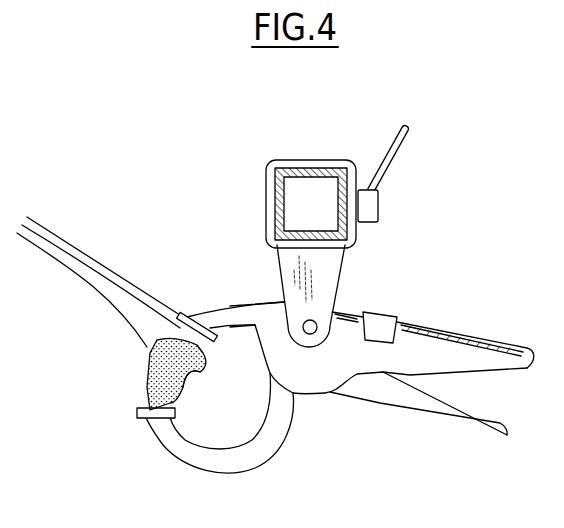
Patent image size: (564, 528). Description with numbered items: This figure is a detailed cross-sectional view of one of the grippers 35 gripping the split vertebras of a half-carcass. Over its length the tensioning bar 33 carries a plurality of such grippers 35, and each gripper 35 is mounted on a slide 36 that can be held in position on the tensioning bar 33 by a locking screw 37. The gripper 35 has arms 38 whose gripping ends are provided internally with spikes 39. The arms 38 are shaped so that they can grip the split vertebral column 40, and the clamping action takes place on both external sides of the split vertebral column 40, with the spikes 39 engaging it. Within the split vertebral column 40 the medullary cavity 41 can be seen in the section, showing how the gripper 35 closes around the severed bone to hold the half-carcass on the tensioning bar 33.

The tensioning bar 33 is at (283, 202).
The gripper 35 is at (336, 427).
The slide 36 is at (313, 161).
The locking screw 37 is at (378, 201).
The arm 38 is at (227, 315).
The spike 39 is at (180, 316).
The split vertebral column 40 is at (165, 369).
The medullary cavity 41 is at (186, 378).